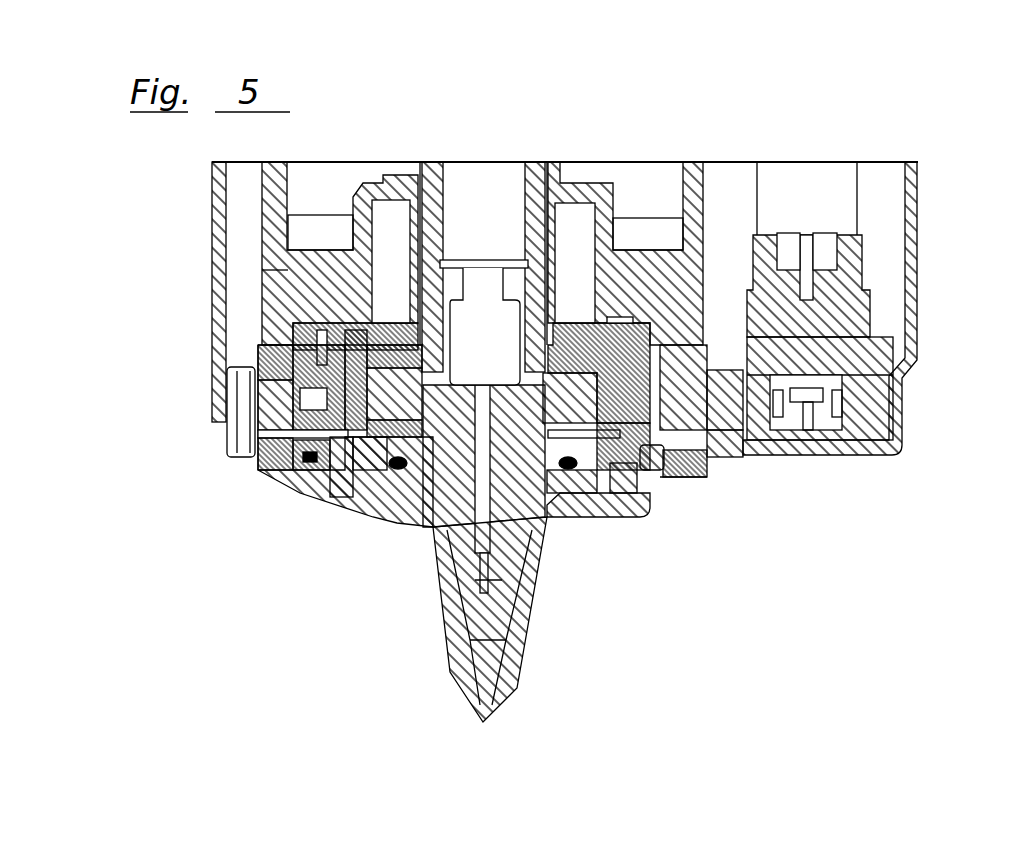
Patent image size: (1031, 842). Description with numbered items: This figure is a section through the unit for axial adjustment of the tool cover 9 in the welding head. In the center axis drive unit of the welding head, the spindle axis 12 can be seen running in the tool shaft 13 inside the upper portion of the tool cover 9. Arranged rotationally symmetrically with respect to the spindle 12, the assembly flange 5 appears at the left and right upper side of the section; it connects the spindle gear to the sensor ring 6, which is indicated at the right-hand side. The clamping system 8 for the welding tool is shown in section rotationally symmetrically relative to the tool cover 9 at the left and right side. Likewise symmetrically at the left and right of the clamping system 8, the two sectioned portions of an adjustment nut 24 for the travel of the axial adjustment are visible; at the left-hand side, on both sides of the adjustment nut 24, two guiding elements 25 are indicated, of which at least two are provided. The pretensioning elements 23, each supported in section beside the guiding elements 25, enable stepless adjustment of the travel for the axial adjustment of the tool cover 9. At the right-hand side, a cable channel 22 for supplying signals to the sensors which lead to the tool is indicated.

The assembly flange 5 is at (640, 347).
The sensor ring 6 is at (690, 370).
The clamping system 8 is at (575, 470).
The tool cover 9 is at (530, 573).
The spindle axis 12 is at (476, 258).
The tool shaft 13 is at (510, 608).
The cable channel 22 is at (687, 437).
The pretensioning elements 23 is at (640, 447).
The adjustment nut 24 is at (707, 460).
The guiding elements 25 is at (310, 457).